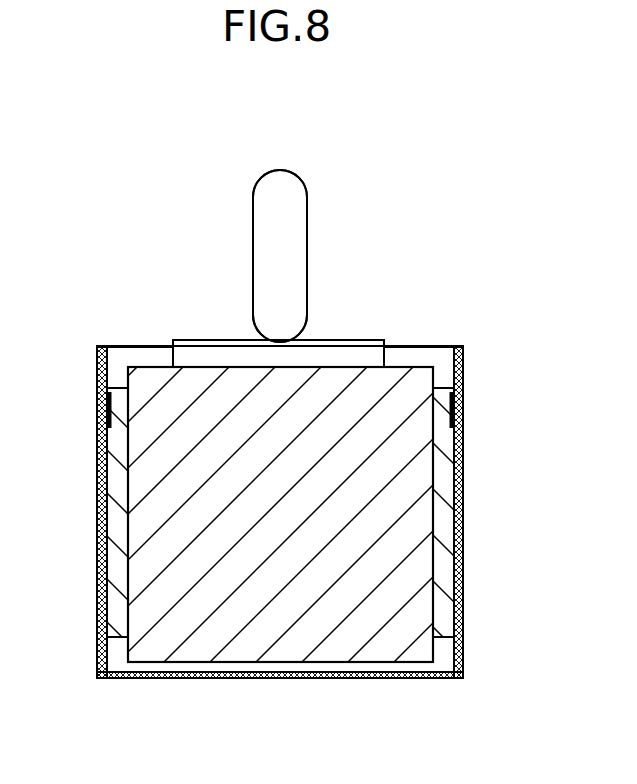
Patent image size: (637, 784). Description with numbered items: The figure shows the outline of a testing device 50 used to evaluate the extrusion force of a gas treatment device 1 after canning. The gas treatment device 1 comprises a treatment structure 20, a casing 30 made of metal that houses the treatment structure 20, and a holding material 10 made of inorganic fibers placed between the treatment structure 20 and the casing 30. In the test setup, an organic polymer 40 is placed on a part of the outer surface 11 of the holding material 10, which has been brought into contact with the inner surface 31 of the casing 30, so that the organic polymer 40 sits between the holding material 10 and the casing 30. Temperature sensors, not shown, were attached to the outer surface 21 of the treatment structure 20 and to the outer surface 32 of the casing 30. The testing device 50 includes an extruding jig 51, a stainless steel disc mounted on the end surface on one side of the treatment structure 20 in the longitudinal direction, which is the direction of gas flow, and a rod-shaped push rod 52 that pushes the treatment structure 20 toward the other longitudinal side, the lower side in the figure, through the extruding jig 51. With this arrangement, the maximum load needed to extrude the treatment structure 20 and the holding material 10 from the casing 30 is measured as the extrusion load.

The gas treatment device 1 is at (134, 340).
The holding material 10 is at (447, 511).
The outer surface of the holding material 11 is at (463, 474).
The treatment structure 20 is at (420, 556).
The outer surface of the treatment structure 21 is at (457, 655).
The casing 30 is at (463, 623).
The inner surface of the casing 31 is at (447, 588).
The outer surface of the casing 32 is at (463, 447).
The organic polymer 40 is at (106, 402).
The testing device 50 is at (215, 222).
The extruding jig 51 is at (348, 348).
The push rod 52 is at (293, 228).